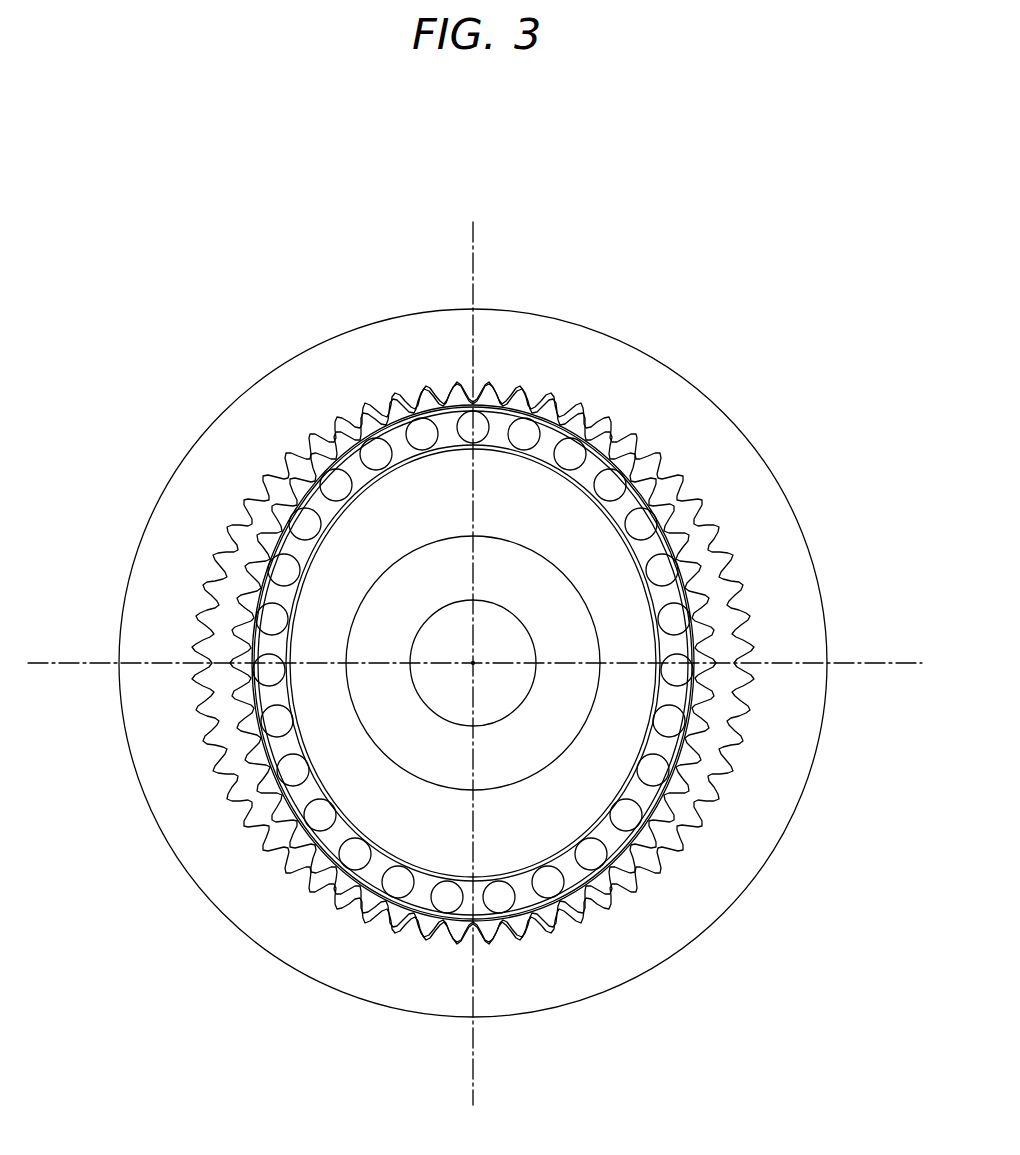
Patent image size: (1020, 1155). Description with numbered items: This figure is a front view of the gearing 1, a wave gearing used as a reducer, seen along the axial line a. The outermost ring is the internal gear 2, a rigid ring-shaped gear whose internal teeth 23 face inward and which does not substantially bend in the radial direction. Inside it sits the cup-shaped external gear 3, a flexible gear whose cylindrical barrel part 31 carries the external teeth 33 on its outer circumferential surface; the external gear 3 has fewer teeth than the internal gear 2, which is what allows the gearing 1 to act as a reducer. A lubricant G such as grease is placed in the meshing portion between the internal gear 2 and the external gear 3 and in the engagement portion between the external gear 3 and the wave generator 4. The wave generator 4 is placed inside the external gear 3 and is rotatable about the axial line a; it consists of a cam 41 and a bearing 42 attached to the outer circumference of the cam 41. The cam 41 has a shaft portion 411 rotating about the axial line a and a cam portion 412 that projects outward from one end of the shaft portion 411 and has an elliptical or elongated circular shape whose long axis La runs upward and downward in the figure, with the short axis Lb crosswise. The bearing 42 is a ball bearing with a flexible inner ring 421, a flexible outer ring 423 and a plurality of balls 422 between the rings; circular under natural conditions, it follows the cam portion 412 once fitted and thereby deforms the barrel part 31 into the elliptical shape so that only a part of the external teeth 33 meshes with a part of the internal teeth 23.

The gearing 1 is at (721, 166).
The internal gear 2 is at (686, 370).
The internal teeth 23 is at (737, 745).
The external gear 3 is at (728, 623).
The barrel part 31 is at (650, 532).
The external teeth 33 is at (715, 782).
The wave generator 4 is at (369, 921).
The cam 41 is at (82, 840).
The shaft portion 411 is at (380, 750).
The cam portion 412 is at (383, 810).
The bearing 42 is at (735, 998).
The inner ring 421 is at (615, 907).
The balls 422 is at (550, 885).
The outer ring 423 is at (548, 933).
The long axis La is at (475, 253).
The short axis Lb is at (889, 665).
The axial line a is at (473, 663).
The lubricant G is at (253, 523).